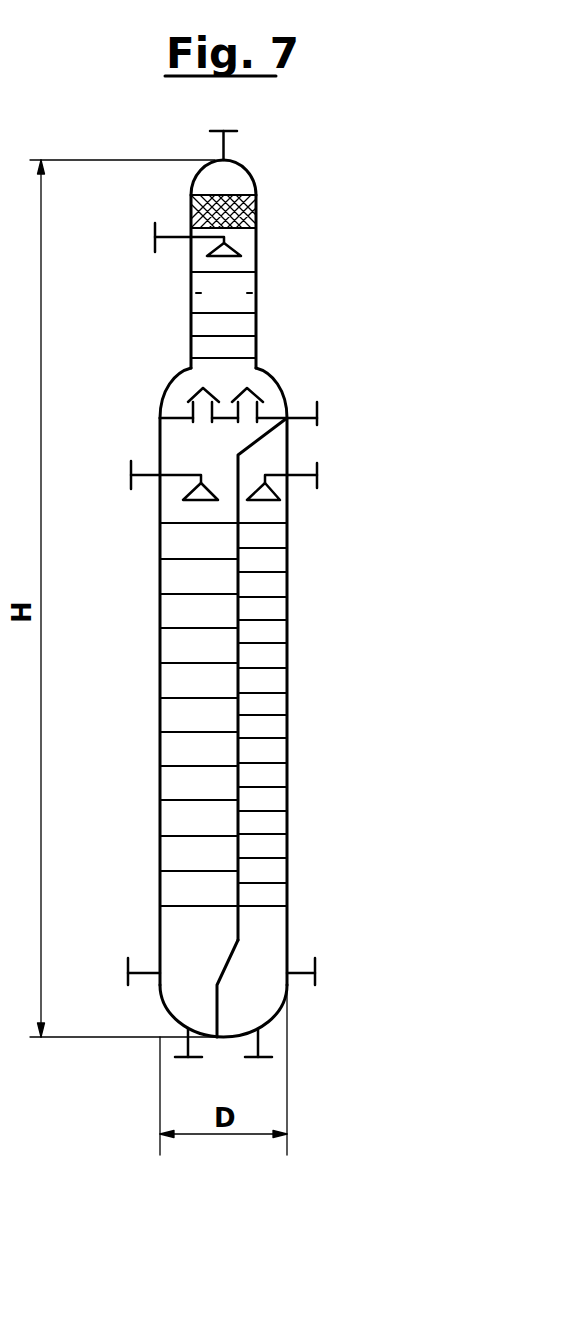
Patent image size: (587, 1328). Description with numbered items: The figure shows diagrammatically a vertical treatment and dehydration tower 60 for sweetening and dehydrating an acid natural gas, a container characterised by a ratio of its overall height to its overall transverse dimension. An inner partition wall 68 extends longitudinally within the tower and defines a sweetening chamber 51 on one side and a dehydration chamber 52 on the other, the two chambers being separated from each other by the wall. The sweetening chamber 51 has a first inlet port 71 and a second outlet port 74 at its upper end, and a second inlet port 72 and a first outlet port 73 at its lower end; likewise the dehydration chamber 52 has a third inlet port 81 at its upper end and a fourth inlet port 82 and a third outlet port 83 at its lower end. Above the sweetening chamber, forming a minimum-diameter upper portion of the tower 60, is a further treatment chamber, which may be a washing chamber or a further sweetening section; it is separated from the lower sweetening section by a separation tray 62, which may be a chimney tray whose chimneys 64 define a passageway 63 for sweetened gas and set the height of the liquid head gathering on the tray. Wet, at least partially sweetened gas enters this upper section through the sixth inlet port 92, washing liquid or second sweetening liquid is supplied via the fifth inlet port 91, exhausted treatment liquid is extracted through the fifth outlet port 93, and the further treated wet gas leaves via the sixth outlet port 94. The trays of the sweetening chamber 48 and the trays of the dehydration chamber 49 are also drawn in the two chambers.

The treatment and dehydration tower 60 is at (360, 308).
The sixth outlet port 94 is at (226, 129).
The fifth inlet port 91 is at (155, 237).
The sixth inlet port 92 is at (186, 402).
The separation tray 62 is at (268, 405).
The passageway 63 is at (191, 410).
The chimneys 64 is at (205, 387).
The second outlet port 74 is at (203, 420).
The fifth outlet port 93 is at (320, 410).
The first inlet port 71 is at (131, 474).
The third inlet port 81 is at (320, 470).
The sweetening chamber 51 is at (143, 596).
The dehydration chamber 52 is at (314, 601).
The trays of left section 48 is at (195, 765).
The trays of right section 49 is at (270, 762).
The second inlet port 72 is at (128, 972).
The fourth inlet port 82 is at (315, 972).
The inner partition wall 68 is at (230, 962).
The first outlet port 73 is at (187, 1058).
The third outlet port 83 is at (260, 1057).